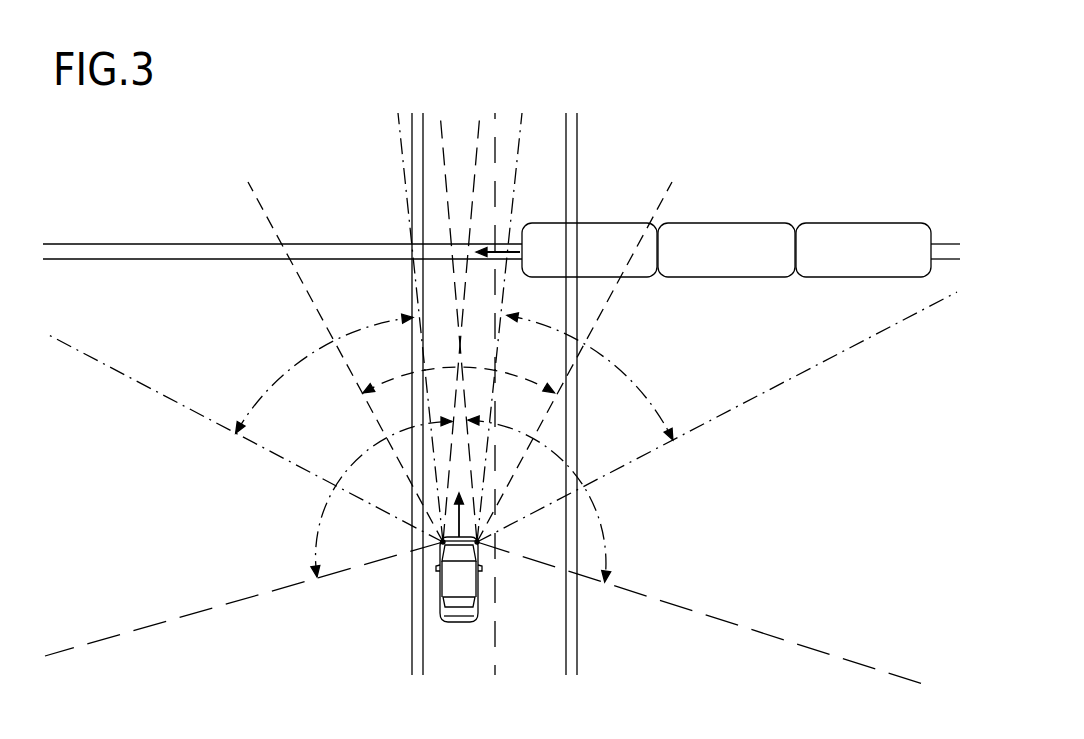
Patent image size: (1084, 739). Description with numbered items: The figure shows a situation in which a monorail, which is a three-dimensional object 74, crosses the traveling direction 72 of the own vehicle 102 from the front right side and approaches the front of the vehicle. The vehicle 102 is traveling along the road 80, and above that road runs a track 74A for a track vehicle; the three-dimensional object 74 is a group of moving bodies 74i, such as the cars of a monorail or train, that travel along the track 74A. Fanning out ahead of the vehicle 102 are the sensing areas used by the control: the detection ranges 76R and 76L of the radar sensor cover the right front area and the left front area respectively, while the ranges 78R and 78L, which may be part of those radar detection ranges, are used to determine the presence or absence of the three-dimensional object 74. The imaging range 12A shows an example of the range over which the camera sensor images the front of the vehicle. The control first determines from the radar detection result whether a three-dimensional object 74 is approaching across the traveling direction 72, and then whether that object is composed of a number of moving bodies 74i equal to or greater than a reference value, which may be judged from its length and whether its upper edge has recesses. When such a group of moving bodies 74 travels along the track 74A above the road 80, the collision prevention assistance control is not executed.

The track 74A is at (168, 244).
The three-dimensional object 74 is at (703, 243).
The moving bodies 74i is at (862, 223).
The range for determining presence or absence of three-dimensional object (left) 78L is at (244, 362).
The range for determining presence or absence of three-dimensional object (right) 78R is at (717, 362).
The imaging range of camera sensor 12A is at (459, 327).
The detection range of radar sensor (left front area) 76L is at (248, 536).
The detection range of radar sensor (right front area) 76R is at (700, 551).
The traveling direction 72 is at (462, 519).
The vehicle 102 is at (440, 591).
The road 80 is at (438, 658).